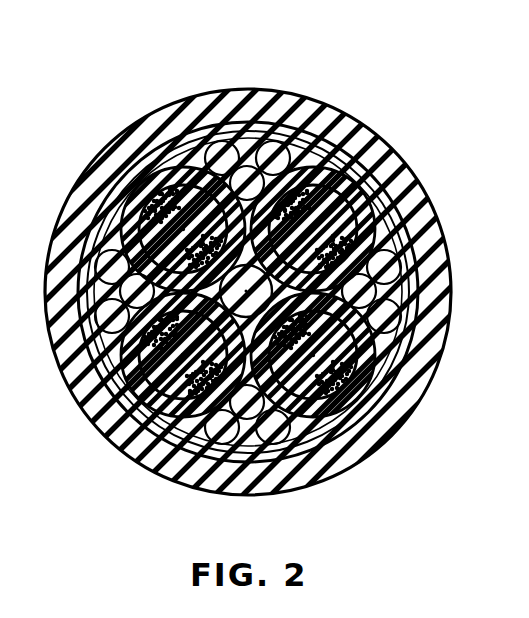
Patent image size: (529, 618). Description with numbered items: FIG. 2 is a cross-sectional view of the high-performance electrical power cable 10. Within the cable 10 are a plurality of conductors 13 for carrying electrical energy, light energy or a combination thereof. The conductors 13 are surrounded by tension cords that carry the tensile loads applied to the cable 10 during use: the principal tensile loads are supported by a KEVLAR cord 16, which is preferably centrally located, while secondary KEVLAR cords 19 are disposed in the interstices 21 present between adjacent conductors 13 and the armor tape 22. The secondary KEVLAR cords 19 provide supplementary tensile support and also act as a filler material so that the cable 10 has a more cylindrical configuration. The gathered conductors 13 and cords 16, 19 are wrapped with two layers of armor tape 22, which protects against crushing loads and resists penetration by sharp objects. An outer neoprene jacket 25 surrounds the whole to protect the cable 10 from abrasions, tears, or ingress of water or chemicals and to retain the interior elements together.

The high-performance electrical power cable 10 is at (145, 90).
The conductors 13 is at (373, 232).
The KEVLAR cord 16 is at (275, 257).
The secondary KEVLAR cords 19 is at (222, 160).
The interstices 21 is at (105, 232).
The armor tape 22 is at (143, 446).
The outer neoprene jacket 25 is at (390, 165).